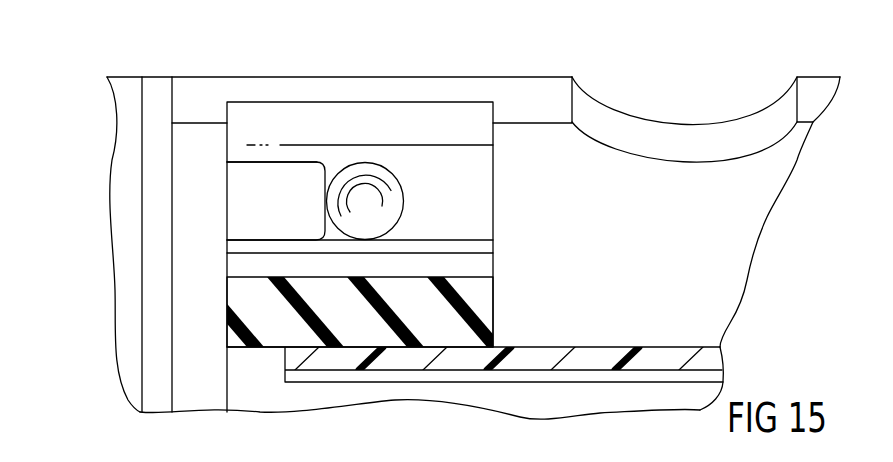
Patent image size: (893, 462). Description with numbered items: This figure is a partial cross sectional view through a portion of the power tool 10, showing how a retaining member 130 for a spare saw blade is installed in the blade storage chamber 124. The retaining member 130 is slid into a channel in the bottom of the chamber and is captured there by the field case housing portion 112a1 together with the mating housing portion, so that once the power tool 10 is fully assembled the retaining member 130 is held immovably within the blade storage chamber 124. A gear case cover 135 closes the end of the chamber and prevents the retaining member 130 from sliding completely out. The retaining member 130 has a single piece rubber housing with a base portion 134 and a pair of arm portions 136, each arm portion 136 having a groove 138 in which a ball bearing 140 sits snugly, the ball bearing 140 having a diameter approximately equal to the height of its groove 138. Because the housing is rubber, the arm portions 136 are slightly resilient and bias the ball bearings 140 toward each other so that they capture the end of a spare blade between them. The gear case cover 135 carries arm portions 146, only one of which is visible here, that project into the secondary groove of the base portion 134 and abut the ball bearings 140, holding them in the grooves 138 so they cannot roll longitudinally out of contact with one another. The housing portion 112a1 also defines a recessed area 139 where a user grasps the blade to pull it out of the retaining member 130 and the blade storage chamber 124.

The power tool 10 is at (107, 66).
The field case housing portion 112a1 is at (535, 100).
The recessed area 139 is at (688, 116).
The blade storage chamber 124 is at (697, 255).
The retaining member 130 is at (214, 153).
The gear case cover 135 is at (160, 328).
The arm portions 136 is at (473, 166).
The grooves 138 is at (332, 168).
The ball bearing 140 is at (362, 187).
The arm portions 146 is at (308, 230).
The base portion 134 is at (487, 318).